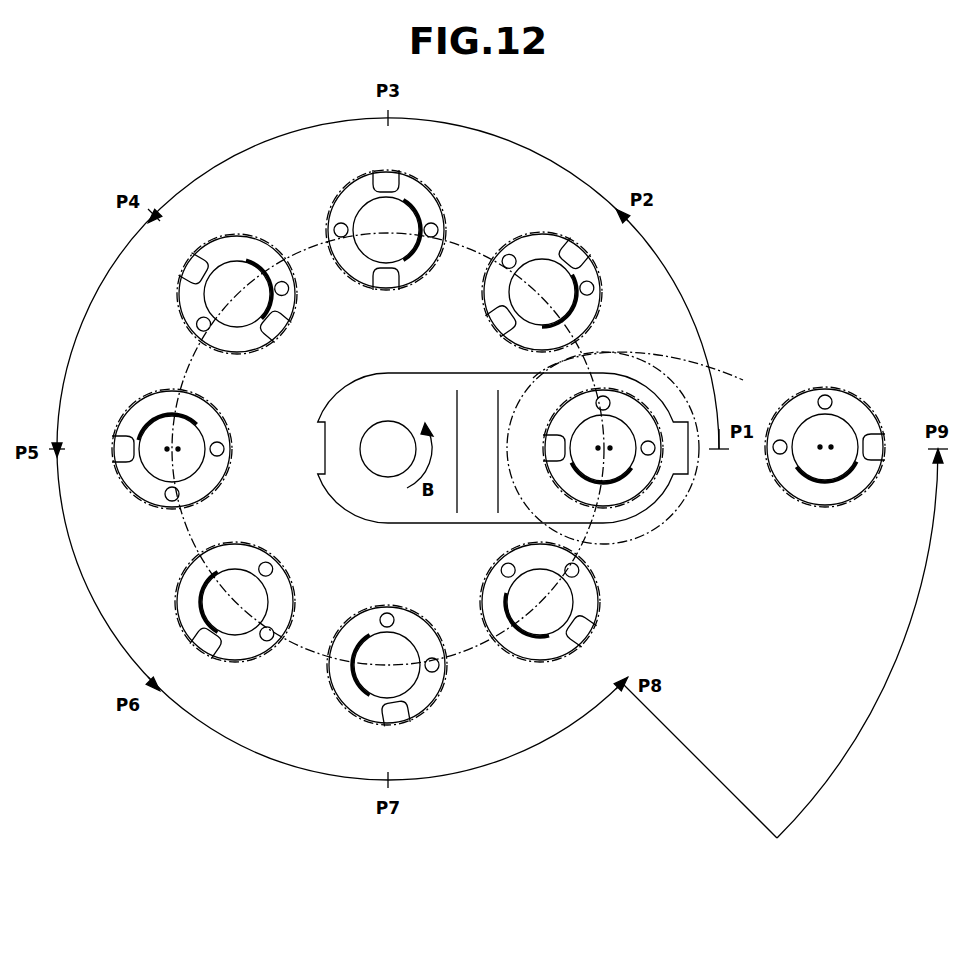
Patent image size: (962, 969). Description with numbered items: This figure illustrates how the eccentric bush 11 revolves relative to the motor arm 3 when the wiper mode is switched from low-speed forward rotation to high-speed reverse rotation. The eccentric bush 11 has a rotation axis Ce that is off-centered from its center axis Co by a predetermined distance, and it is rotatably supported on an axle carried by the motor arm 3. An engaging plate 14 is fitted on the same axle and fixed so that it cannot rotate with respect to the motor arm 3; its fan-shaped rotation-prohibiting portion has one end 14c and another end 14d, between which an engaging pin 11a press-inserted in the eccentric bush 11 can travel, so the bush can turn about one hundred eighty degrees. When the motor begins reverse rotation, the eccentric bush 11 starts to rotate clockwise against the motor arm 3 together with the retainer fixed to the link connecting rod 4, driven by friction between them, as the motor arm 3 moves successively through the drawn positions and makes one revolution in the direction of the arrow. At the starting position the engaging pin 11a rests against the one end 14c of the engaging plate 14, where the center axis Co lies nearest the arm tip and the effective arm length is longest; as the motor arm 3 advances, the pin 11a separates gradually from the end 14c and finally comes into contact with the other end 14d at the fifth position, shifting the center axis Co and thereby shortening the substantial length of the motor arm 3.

The motor arm 3 is at (422, 381).
The link connecting rod 4 is at (745, 380).
The eccentric bush 11 is at (437, 190).
The engaging pin 11a is at (437, 230).
The engaging plate 14 is at (150, 495).
The one end of rotation-prohibiting portion 14c is at (398, 178).
The other end of rotation-prohibiting portion 14d is at (265, 326).
The rotation axis Ce is at (167, 449).
The center axis Co is at (180, 449).